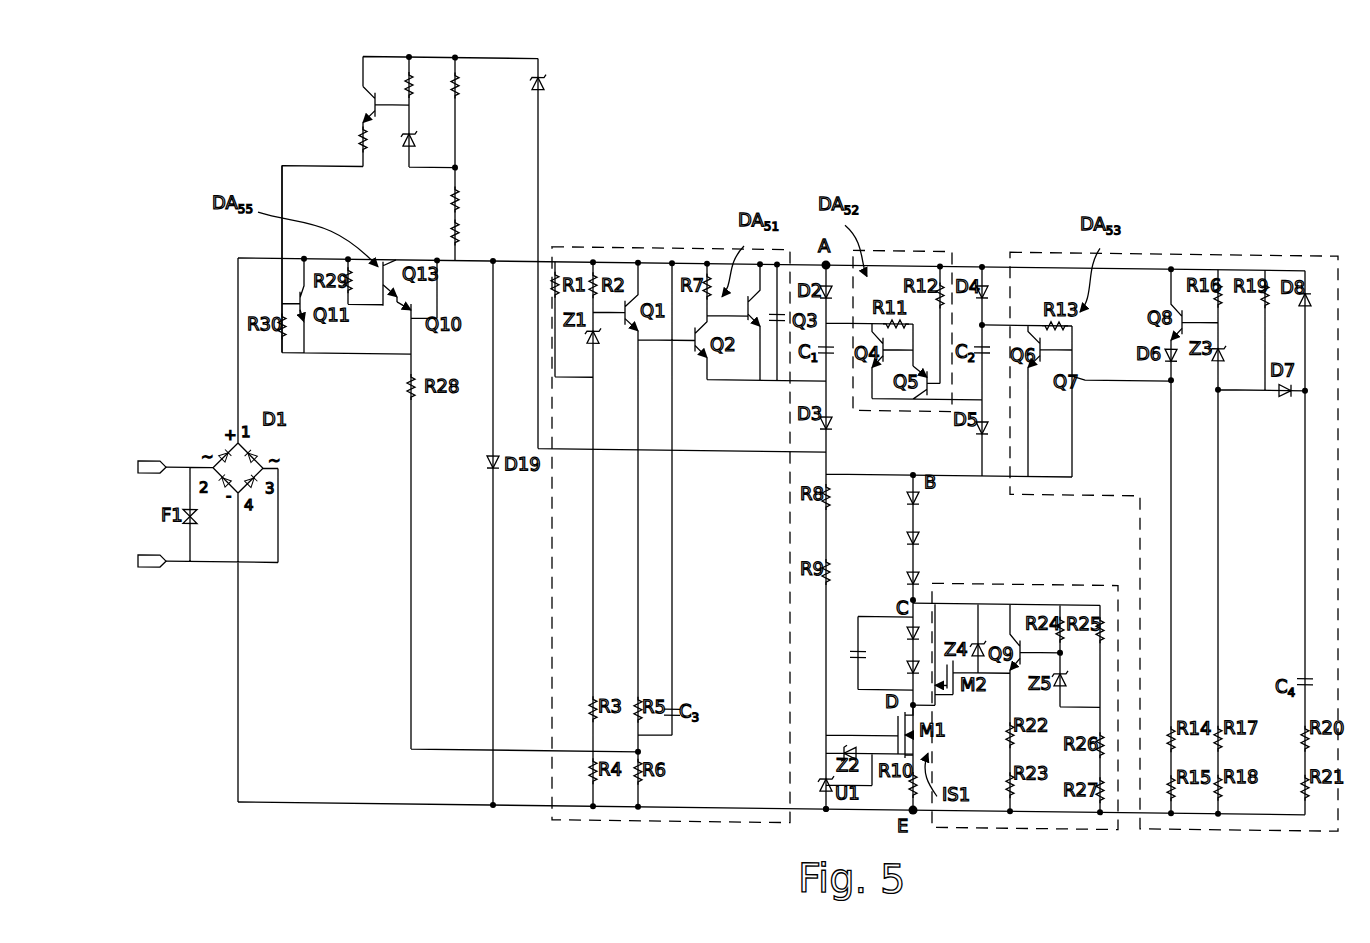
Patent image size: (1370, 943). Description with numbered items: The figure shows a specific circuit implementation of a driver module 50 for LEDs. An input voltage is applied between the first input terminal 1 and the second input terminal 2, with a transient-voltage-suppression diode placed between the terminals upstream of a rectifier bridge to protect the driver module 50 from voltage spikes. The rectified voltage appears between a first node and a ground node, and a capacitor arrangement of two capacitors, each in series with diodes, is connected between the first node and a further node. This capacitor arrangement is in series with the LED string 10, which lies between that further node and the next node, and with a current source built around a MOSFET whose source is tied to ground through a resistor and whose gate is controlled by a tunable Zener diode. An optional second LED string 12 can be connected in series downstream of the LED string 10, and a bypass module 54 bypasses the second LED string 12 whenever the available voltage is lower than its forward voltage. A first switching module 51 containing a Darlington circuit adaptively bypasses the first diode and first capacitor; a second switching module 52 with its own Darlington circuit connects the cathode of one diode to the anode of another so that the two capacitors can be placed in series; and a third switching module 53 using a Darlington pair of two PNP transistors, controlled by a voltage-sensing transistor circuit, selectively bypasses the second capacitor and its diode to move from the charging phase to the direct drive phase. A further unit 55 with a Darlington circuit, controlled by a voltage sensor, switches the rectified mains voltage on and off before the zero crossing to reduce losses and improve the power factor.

The first input terminal 1 is at (151, 568).
The second input terminal 2 is at (148, 462).
The LED string 10 is at (897, 482).
The second LED string 12 is at (897, 616).
The driver module 50 is at (718, 832).
The first switching module 51 is at (657, 241).
The second switching module 52 is at (893, 242).
The third switching module 53 is at (1148, 242).
The bypass module 54 is at (1043, 820).
The further unit 55 is at (280, 208).